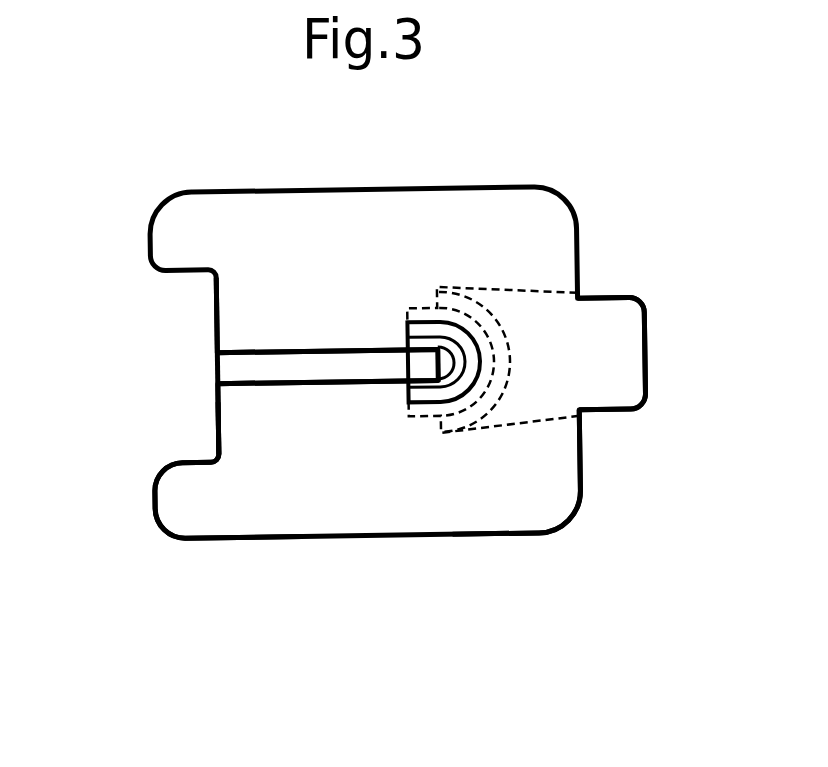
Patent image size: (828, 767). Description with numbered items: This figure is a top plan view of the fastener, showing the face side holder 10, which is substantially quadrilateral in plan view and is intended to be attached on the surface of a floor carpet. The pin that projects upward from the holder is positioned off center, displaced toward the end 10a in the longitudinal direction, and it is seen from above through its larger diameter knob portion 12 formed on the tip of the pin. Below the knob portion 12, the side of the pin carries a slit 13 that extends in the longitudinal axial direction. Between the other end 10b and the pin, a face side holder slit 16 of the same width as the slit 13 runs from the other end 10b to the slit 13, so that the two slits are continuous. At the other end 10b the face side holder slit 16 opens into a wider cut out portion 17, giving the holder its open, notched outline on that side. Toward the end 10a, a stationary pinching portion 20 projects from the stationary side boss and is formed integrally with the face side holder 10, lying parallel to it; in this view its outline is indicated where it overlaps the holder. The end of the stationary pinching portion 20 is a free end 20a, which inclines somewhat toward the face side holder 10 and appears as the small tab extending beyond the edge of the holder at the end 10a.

The face side holder 10 is at (199, 200).
The end 10a is at (582, 457).
The other end 10b is at (148, 492).
The knob portion 12 is at (423, 338).
The slit 13 is at (426, 367).
The face side holder slit 16 is at (262, 361).
The cut out portion 17 is at (187, 388).
The stationary pinching portion 20 is at (530, 288).
The free end 20a is at (646, 334).